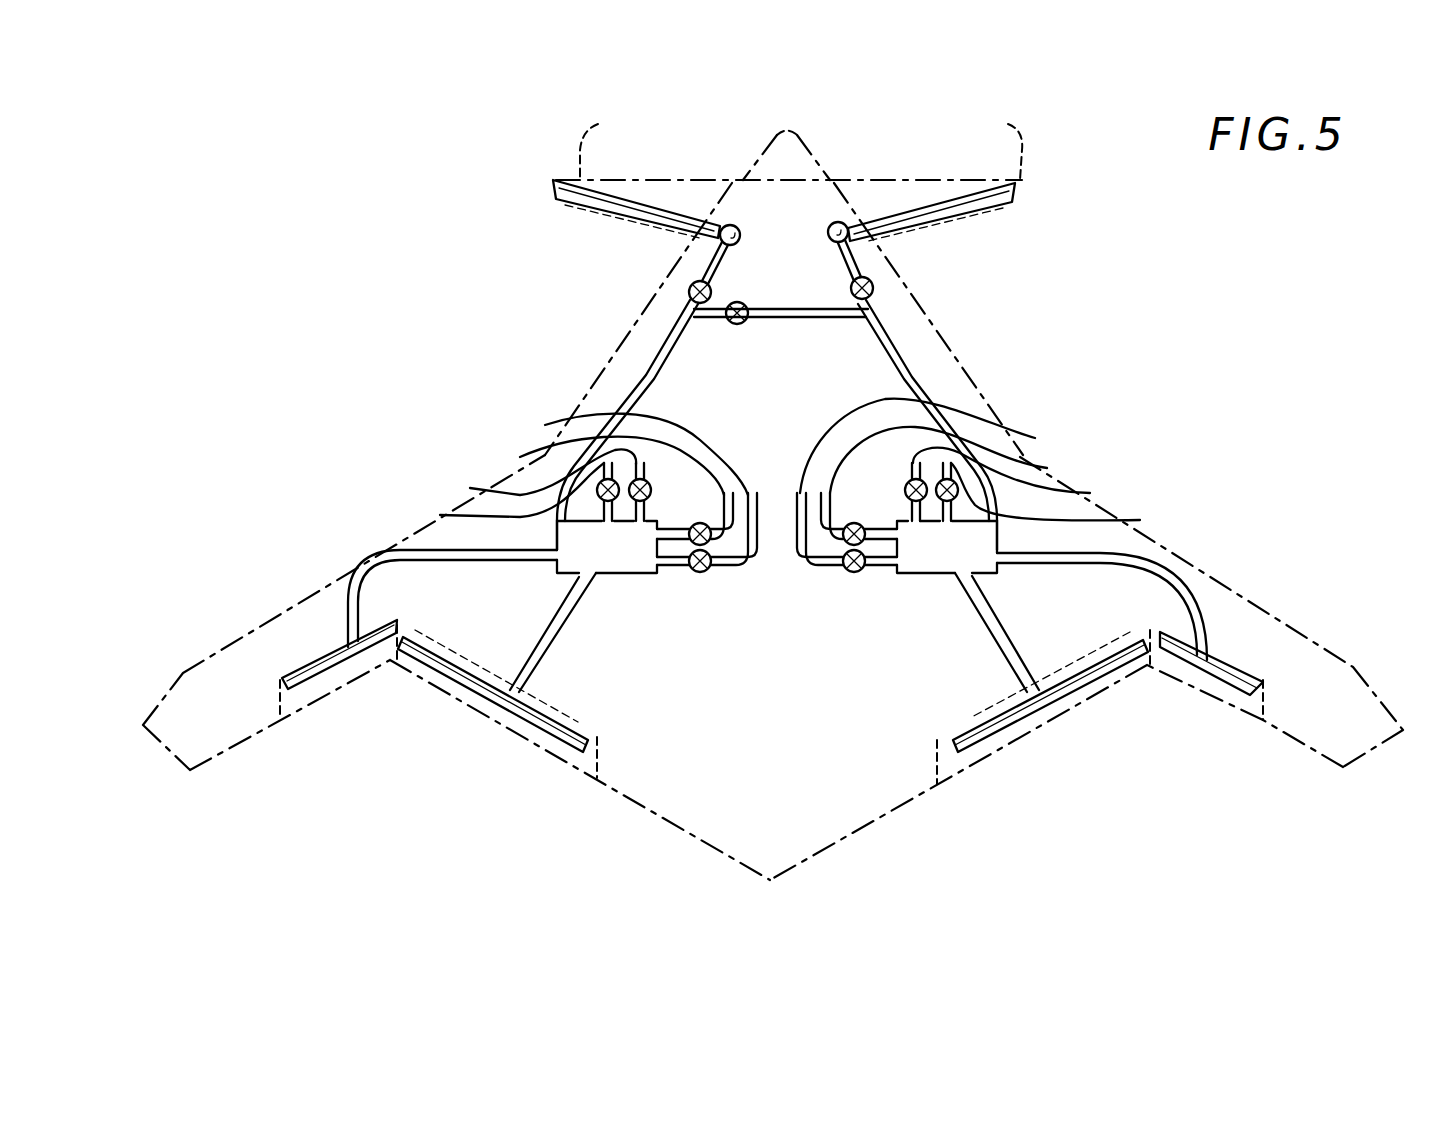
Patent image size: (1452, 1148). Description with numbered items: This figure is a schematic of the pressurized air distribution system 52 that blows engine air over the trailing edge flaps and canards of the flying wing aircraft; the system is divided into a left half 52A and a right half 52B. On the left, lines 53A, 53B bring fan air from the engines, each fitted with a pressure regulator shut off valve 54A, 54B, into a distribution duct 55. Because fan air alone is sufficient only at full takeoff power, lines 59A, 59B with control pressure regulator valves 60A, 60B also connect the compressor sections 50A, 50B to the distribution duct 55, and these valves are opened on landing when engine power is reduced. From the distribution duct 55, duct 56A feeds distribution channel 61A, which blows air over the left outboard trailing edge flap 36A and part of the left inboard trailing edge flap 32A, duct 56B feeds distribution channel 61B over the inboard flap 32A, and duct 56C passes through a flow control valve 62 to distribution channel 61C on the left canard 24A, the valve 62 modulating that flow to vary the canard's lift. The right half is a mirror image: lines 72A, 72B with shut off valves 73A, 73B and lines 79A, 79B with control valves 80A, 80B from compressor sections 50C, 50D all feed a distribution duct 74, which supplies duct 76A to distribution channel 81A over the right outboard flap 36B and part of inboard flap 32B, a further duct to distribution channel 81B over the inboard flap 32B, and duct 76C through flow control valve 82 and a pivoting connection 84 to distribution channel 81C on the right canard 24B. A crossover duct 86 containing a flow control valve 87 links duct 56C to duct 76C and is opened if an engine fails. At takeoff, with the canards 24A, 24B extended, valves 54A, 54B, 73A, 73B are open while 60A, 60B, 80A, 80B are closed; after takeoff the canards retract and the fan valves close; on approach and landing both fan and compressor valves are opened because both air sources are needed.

The left canard 24A is at (613, 147).
The right canard 24B is at (993, 148).
The pivoting connection 84 is at (728, 224).
The distribution channel 61C is at (553, 187).
The distribution channel 81C is at (1027, 194).
The flow control valve 62 is at (690, 285).
The flow control valve 82 is at (872, 283).
The pressurized air distribution system 52 is at (1126, 284).
The duct 56C is at (670, 327).
The duct 76C is at (890, 318).
The distribution system half 52A is at (637, 377).
The distribution system half 52B is at (923, 370).
The crossover duct 86 is at (820, 320).
The flow control valve 87 is at (740, 325).
The line 53A is at (546, 489).
The line 53B is at (527, 488).
The compressor section 50A is at (452, 495).
The compressor section 50B is at (484, 474).
The compressor section 50C is at (1064, 476).
The compressor section 50D is at (1109, 497).
The line 72A is at (1028, 483).
The line 72B is at (1008, 482).
The distribution duct 55 is at (657, 513).
The distribution duct 74 is at (900, 518).
The line 59A is at (557, 520).
The line 59B is at (632, 522).
The control pressure regulator valve 60A is at (607, 522).
The control pressure regulator valve 60B is at (642, 522).
The pressure regulator shut off valve 54A is at (690, 546).
The pressure regulator shut off valve 54B is at (708, 570).
The pressure regulator shut off valve 73A is at (858, 546).
The pressure regulator shut off valve 73B is at (846, 570).
The line 79A is at (998, 524).
The line 79B is at (1000, 572).
The control pressure regulator valve 80A is at (945, 522).
The control pressure regulator valve 80B is at (915, 522).
The duct 56A is at (363, 583).
The duct 56B is at (537, 667).
The duct 76A is at (1204, 607).
The distribution channel 61A is at (337, 667).
The distribution channel 61B is at (543, 730).
The outboard trailing edge flap 36A is at (290, 723).
The inboard trailing edge flap 32A is at (483, 720).
The distribution channel 81A is at (1237, 697).
The distribution channel 81B is at (1013, 720).
The outboard trailing edge flap 36B is at (1193, 690).
The inboard trailing edge flap 32B is at (950, 777).